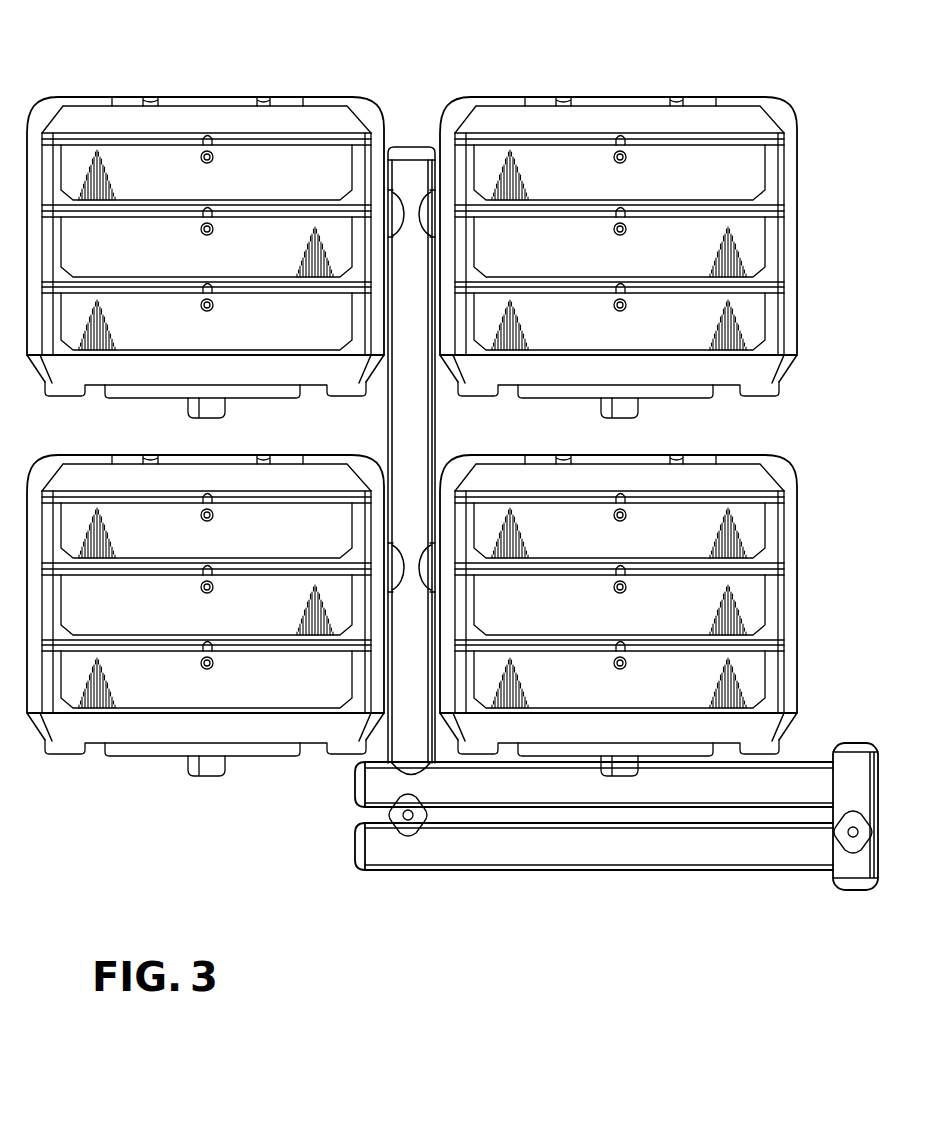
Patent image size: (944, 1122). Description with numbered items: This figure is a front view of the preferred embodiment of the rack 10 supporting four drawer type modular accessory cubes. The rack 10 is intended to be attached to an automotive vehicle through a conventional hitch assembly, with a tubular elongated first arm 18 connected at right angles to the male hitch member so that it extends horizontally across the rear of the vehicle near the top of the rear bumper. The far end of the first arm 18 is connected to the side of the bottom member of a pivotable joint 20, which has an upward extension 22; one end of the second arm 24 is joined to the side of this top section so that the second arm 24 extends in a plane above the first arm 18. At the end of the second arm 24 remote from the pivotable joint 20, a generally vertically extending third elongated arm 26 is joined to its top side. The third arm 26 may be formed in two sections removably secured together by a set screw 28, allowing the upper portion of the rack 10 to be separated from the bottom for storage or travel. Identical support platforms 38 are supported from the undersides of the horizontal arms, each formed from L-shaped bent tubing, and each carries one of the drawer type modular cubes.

The rack 10 is at (457, 515).
The first arm 18 is at (567, 857).
The pivotable joint 20 is at (879, 853).
The upward extension 22 is at (851, 745).
The second arm 24 is at (795, 762).
The third elongated arm 26 is at (436, 420).
The set screw 28 is at (395, 748).
The support platform 38 is at (714, 403).